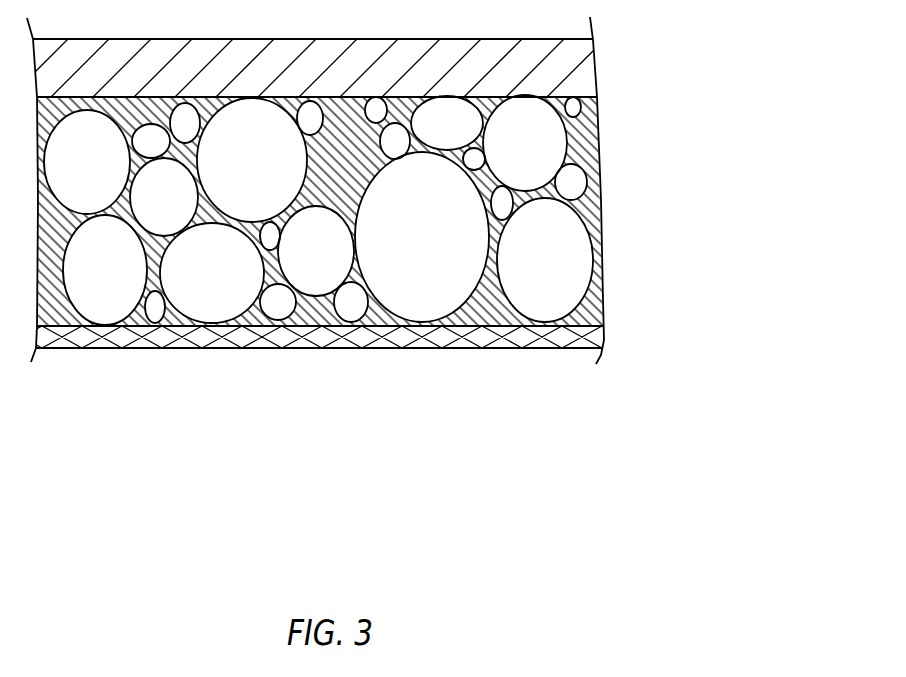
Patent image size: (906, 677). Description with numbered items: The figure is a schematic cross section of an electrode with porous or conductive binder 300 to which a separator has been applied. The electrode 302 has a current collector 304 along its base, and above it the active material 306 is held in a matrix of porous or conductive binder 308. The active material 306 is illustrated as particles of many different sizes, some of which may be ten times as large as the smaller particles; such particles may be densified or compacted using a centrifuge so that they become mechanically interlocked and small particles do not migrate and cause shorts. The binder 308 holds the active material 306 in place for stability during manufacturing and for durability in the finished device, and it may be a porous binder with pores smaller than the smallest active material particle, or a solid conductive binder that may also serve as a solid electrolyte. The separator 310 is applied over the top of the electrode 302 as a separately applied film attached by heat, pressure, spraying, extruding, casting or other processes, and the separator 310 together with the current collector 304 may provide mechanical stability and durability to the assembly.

The electrode with porous or conductive binder 300 is at (361, 303).
The electrode 302 is at (300, 349).
The current collector 304 is at (165, 349).
The active material 306 is at (562, 135).
The porous or conductive binder 308 is at (502, 318).
The separator 310 is at (573, 31).